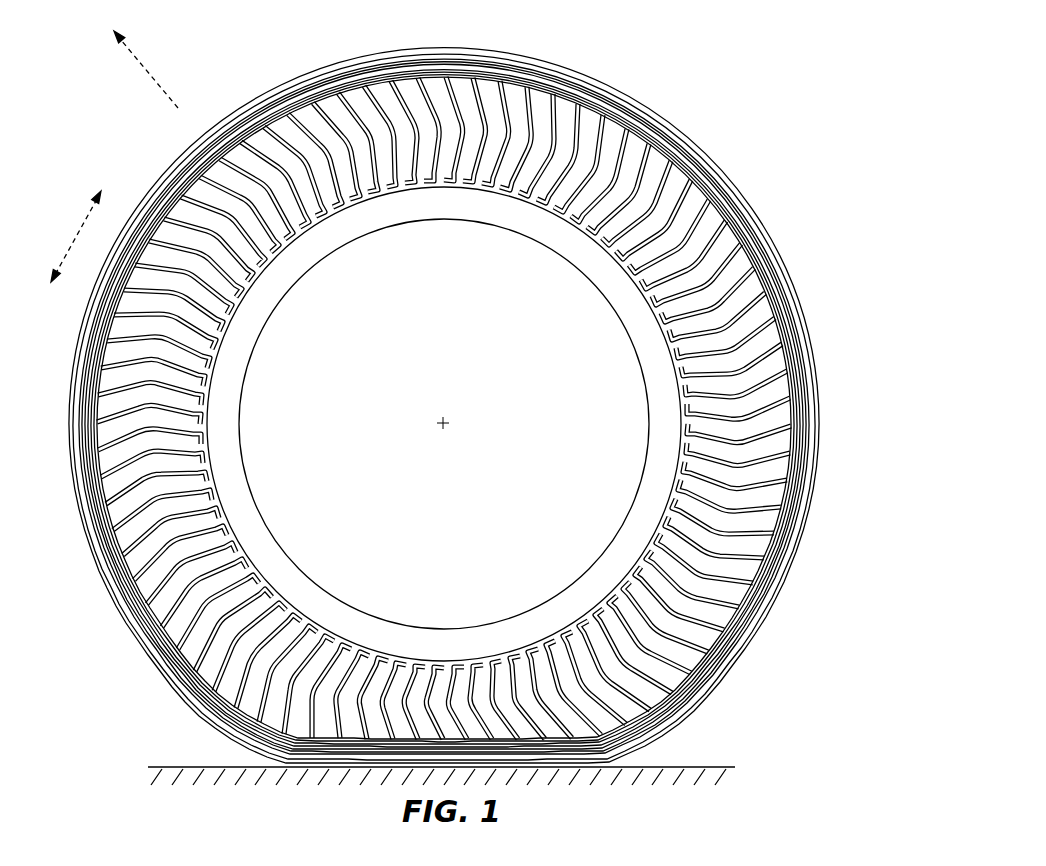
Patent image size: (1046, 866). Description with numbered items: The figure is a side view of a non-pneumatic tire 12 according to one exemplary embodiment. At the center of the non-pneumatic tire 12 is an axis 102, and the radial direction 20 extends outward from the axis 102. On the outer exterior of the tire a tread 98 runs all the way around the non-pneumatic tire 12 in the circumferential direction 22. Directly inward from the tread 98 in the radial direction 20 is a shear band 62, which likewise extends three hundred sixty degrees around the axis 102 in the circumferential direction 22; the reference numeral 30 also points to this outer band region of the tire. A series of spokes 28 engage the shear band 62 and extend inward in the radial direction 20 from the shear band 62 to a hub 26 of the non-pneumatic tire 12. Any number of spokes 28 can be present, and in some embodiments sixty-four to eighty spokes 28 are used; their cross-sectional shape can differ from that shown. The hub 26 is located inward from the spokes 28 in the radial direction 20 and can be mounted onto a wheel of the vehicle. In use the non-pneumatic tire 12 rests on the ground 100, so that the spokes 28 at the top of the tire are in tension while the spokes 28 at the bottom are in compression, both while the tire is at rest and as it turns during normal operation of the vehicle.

The non-pneumatic tire 12 is at (480, 398).
The radial direction 20 is at (147, 71).
The circumferential direction 22 is at (76, 233).
The hub 26 is at (250, 503).
The spokes 28 is at (768, 366).
The outer shear band 30 is at (781, 522).
The shear band 62 is at (729, 646).
The tread 98 is at (648, 106).
The ground 100 is at (714, 767).
The axis 102 is at (439, 429).